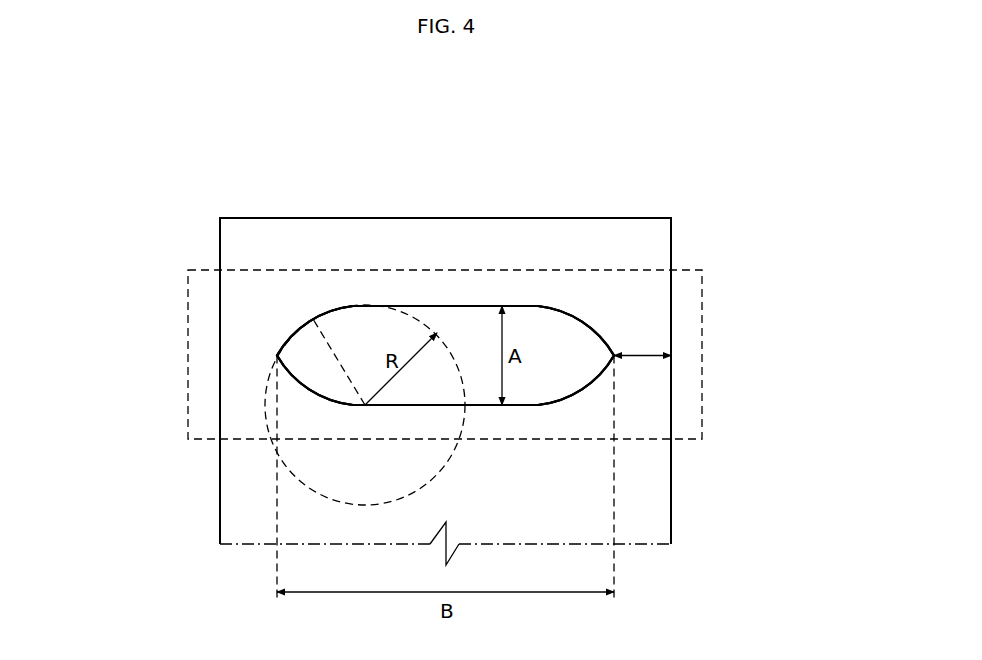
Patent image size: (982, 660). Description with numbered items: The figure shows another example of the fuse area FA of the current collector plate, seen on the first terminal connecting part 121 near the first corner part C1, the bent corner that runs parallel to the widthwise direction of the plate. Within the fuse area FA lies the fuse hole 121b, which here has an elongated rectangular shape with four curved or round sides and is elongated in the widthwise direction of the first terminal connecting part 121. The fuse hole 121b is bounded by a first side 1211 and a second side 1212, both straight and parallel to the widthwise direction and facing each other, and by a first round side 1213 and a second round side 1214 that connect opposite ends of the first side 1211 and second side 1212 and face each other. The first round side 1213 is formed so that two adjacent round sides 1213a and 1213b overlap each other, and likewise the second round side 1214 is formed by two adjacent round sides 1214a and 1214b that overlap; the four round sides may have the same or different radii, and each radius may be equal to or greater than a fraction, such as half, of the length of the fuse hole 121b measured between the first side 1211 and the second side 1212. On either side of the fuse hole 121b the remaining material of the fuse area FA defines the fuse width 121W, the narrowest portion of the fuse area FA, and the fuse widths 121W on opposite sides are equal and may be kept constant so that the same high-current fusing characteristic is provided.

The first terminal connecting part 121 is at (505, 237).
The fuse hole 121b is at (471, 306).
The first side 1211 is at (522, 306).
The second side 1212 is at (522, 407).
The first round side 1213 is at (92, 312).
The round side 1213a is at (297, 327).
The round side 1213b is at (298, 382).
The second round side 1214 is at (800, 315).
The round side 1214a is at (593, 327).
The round side 1214b is at (595, 380).
The fuse width 121W is at (642, 341).
The first corner part C1 is at (573, 218).
The fuse area FA is at (702, 287).